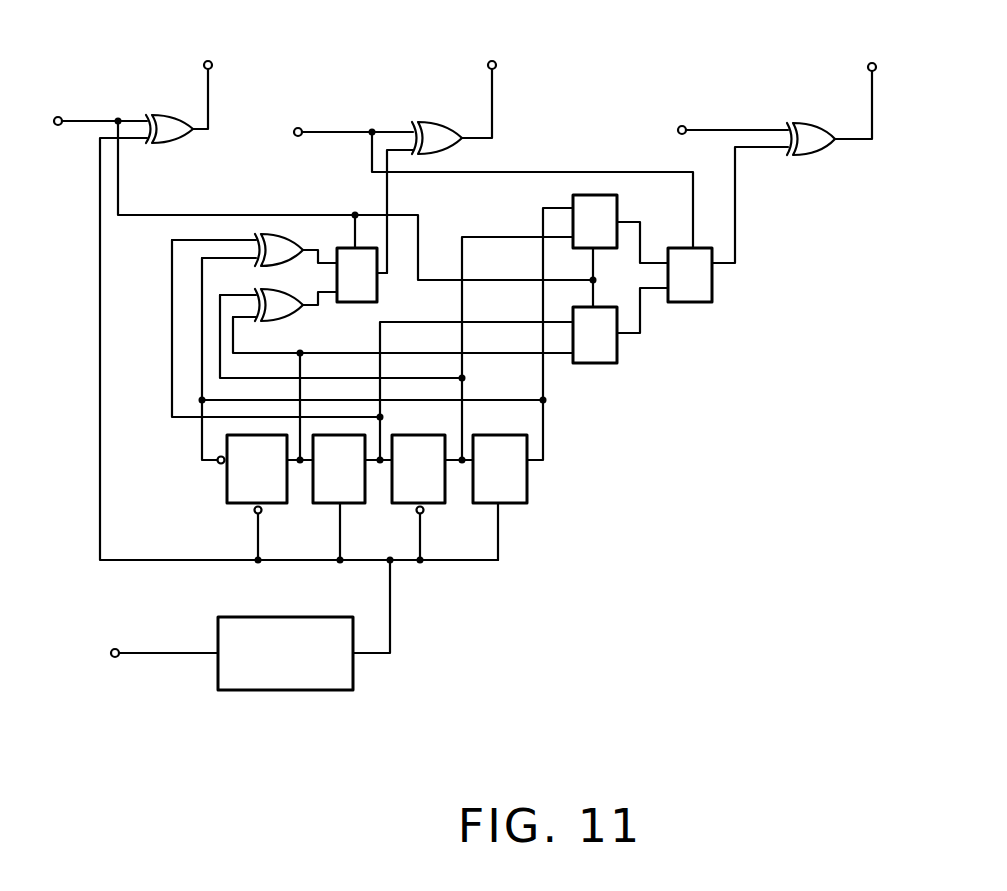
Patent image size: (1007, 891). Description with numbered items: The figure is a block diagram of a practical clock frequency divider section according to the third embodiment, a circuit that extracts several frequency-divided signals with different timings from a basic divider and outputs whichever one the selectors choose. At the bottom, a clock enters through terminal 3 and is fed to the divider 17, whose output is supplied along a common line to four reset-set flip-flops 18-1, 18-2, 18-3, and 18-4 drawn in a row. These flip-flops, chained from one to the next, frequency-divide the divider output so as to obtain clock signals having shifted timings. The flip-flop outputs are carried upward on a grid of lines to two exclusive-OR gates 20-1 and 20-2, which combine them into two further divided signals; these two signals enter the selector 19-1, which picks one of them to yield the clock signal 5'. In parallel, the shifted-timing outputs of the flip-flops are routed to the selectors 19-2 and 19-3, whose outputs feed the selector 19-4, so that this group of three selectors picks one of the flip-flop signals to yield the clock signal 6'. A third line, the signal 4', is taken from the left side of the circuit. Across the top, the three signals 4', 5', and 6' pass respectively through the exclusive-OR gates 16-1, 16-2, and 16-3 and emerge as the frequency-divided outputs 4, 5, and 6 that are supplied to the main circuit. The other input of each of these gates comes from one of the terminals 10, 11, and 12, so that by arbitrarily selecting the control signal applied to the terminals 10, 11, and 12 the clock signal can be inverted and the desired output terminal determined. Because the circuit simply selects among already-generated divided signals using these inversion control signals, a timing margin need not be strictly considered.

The clock input terminal 3 is at (115, 657).
The frequency-divided output 4 is at (204, 72).
The signal 4' is at (278, 349).
The frequency-divided output 5 is at (480, 76).
The CK signal 5' is at (404, 211).
The frequency-divided output 6 is at (855, 76).
The CK signal 6' is at (750, 205).
The terminal 10 is at (58, 117).
The terminal 11 is at (299, 128).
The terminal 12 is at (683, 126).
The EX-OR 16-1 is at (168, 110).
The EX-OR 16-2 is at (433, 121).
The EX-OR 16-3 is at (808, 121).
The 1/2 DIV 17 is at (276, 692).
The RS-FF 18-1 is at (238, 506).
The RS-FF 18-2 is at (326, 506).
The RS-FF 18-3 is at (403, 506).
The RS-FF 18-4 is at (486, 506).
The selector 19-1 is at (347, 304).
The selector 19-2 is at (618, 203).
The selector 19-3 is at (601, 365).
The selector 19-4 is at (700, 304).
The EX-OR 20-1 is at (269, 232).
The EX-OR 20-2 is at (278, 323).